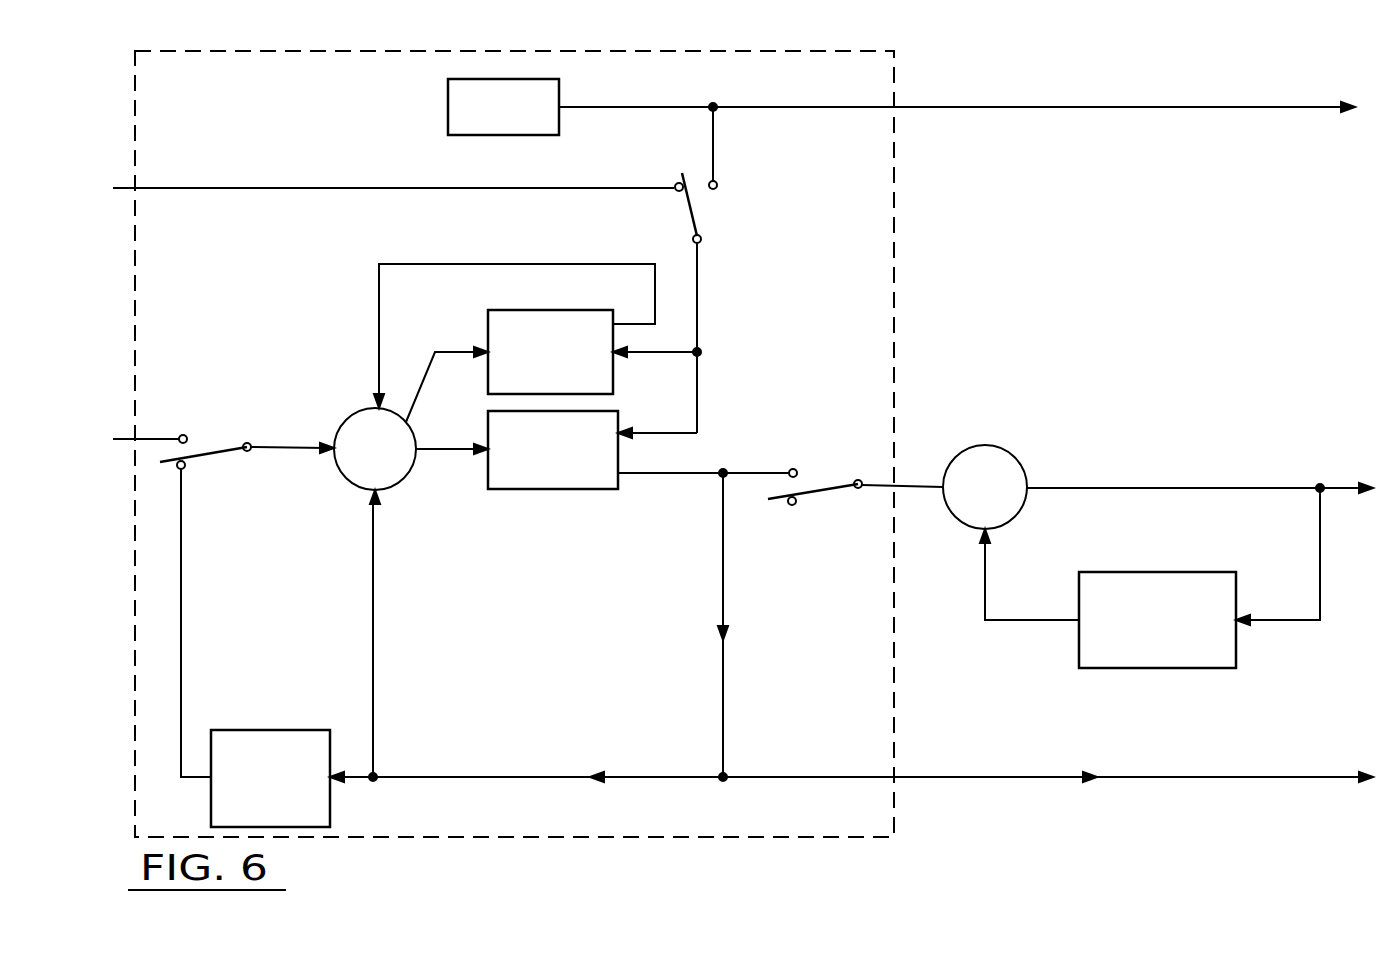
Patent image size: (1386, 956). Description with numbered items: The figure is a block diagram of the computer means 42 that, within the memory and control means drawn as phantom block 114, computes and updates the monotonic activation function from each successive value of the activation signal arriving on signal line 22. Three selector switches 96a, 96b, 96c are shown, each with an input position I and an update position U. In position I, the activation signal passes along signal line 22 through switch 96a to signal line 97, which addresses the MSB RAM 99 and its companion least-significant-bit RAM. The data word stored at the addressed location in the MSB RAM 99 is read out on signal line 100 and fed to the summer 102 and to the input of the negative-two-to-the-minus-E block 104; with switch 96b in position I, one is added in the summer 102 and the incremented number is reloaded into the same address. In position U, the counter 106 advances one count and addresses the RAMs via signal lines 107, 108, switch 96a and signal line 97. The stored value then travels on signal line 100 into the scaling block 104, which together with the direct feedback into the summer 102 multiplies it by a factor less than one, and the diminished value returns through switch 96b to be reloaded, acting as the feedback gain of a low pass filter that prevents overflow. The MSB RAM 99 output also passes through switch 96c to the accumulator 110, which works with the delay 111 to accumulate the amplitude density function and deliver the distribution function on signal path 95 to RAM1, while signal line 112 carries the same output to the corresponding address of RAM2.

The signal line 22 is at (528, 187).
The computer means 42 is at (926, 92).
The signal path 95 is at (1118, 488).
The selector switch 96a is at (693, 207).
The selector switch 96b is at (190, 462).
The selector switch 96c is at (820, 483).
The signal line 97 is at (697, 293).
The MSB RAM 99 is at (514, 377).
The signal line 100 is at (723, 517).
The summer 102 is at (347, 433).
The -2^-E block 104 is at (300, 816).
The counter 106 is at (550, 95).
The signal line 107 is at (638, 107).
The signal line 108 is at (715, 120).
The accumulator 110 is at (990, 457).
The delay 111 is at (1206, 659).
The signal line 112 is at (1038, 775).
The phantom block 114 is at (893, 230).